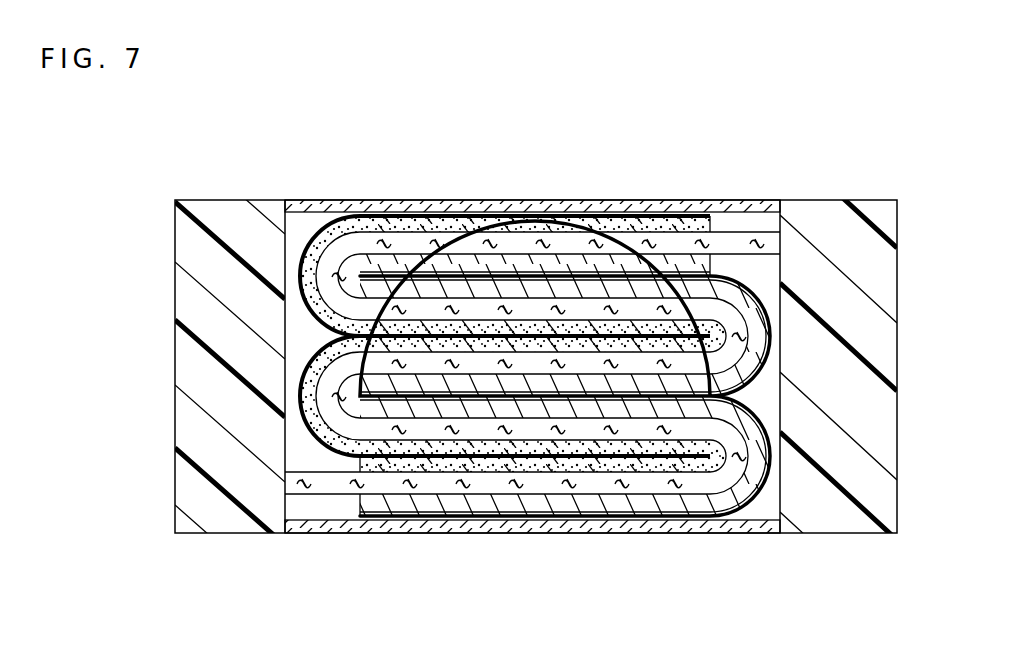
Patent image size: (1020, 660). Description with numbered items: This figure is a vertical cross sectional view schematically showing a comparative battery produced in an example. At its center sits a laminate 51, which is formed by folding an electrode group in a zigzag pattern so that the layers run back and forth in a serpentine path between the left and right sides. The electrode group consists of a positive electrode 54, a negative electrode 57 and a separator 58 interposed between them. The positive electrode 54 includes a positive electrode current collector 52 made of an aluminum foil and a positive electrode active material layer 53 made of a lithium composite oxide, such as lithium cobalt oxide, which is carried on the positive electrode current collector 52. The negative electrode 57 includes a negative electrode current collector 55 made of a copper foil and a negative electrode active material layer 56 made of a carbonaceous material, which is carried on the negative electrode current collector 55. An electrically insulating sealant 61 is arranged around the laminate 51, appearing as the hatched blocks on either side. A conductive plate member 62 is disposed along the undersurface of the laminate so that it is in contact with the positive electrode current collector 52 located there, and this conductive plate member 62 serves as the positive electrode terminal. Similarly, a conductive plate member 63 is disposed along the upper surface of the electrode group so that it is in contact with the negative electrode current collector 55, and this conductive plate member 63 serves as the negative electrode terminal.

The laminate 51 is at (309, 219).
The positive electrode current collector 52 is at (583, 596).
The positive electrode active material layer 53 is at (560, 505).
The positive electrode 54 is at (497, 557).
The negative electrode current collector 55 is at (603, 213).
The negative electrode active material layer 56 is at (558, 126).
The negative electrode 57 is at (570, 164).
The separator 58 is at (740, 245).
The electrically insulating sealant 61 is at (232, 215).
The conductive plate member 62 is at (633, 523).
The conductive plate member 63 is at (686, 207).